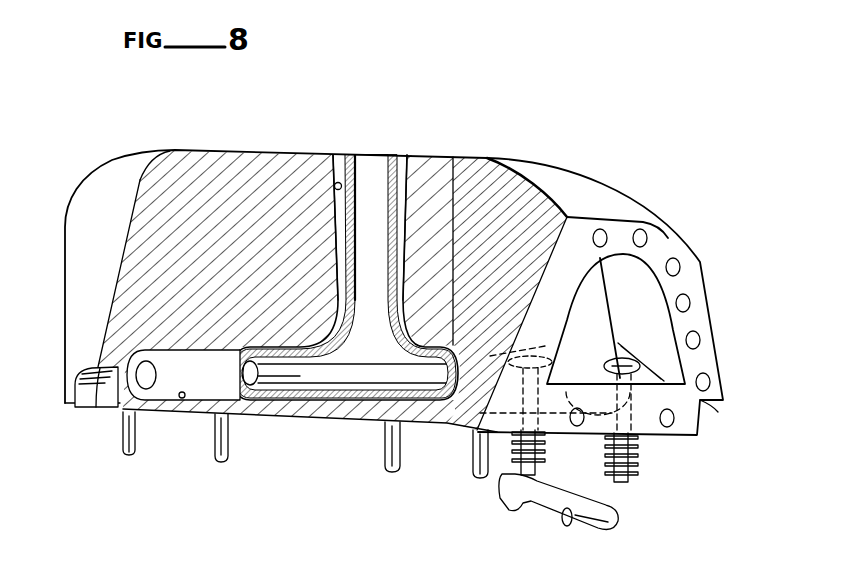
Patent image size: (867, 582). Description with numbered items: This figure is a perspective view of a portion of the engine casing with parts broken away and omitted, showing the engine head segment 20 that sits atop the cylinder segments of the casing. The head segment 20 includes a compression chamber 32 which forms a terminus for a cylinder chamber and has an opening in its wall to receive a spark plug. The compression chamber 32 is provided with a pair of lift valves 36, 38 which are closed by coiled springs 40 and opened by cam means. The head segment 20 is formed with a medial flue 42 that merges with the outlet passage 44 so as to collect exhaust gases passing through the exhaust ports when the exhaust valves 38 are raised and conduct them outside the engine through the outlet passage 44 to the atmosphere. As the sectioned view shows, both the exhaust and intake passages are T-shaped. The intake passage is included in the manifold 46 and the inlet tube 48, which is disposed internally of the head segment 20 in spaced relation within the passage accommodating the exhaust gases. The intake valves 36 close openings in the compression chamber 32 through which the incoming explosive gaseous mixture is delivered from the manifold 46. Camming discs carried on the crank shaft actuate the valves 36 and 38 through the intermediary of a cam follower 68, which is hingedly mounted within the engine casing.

The engine head segment 20 is at (430, 153).
The compression chamber 32 is at (648, 307).
The lift valve 36 is at (215, 454).
The exhaust valve 38 is at (126, 454).
The coiled spring 40 is at (605, 445).
The medial flue 42 is at (182, 400).
The outlet passage 44 is at (338, 183).
The manifold 46 is at (344, 366).
The inlet tube 48 is at (353, 205).
The cam follower 68 is at (548, 508).